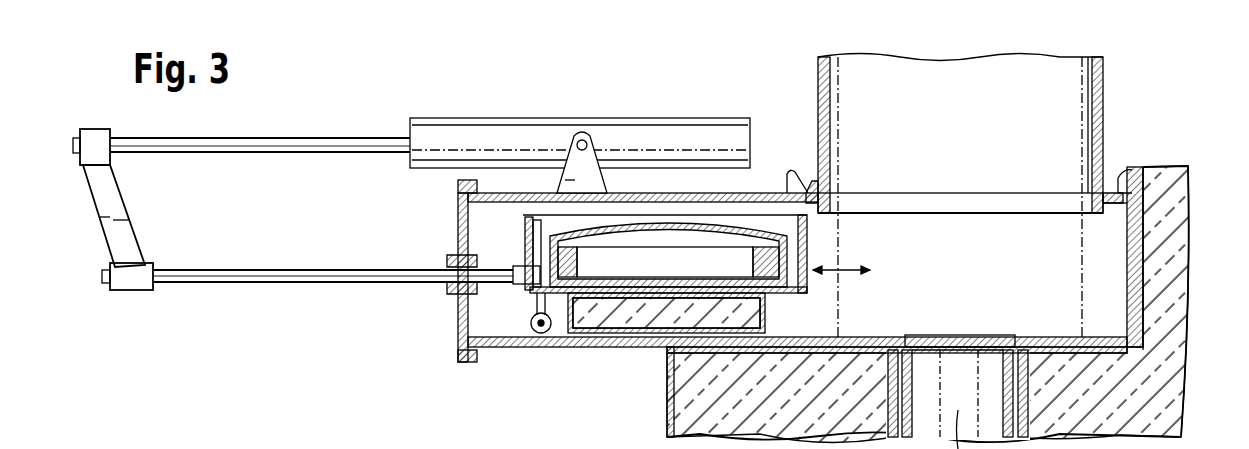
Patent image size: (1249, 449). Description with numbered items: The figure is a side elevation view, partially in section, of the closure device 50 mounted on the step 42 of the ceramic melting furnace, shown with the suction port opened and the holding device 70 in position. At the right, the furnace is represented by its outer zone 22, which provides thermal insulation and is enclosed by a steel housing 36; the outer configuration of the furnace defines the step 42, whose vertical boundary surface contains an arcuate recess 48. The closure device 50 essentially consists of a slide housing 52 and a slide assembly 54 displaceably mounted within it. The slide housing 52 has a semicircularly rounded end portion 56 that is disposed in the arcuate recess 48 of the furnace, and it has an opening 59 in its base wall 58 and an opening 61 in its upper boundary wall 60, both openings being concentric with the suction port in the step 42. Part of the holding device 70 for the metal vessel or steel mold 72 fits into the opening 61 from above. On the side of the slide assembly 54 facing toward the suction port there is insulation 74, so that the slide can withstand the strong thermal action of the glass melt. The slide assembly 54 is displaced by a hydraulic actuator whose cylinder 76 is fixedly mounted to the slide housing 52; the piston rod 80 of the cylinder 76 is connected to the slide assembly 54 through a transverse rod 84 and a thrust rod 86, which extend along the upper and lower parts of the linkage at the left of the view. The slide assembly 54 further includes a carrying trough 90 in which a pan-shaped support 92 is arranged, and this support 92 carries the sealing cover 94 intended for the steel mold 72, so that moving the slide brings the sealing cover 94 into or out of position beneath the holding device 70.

The outer zone 22 is at (1160, 393).
The steel housing 36 is at (668, 374).
The step 42 is at (727, 364).
The arcuate recess 48 is at (1145, 240).
The closure device 50 is at (748, 108).
The slide housing 52 is at (458, 322).
The slide assembly 54 is at (518, 292).
The semicircularly rounded end portion 56 is at (1135, 272).
The base wall 58 is at (546, 334).
The opening 59 is at (958, 338).
The upper boundary wall 60 is at (770, 192).
The opening 61 is at (958, 200).
The holding device 70 is at (1110, 78).
The steel mold 72 is at (1105, 121).
The insulation 74 is at (600, 312).
The cylinder 76 is at (504, 132).
The piston rod 80 is at (263, 137).
The transverse rod 84 is at (113, 228).
The thrust rod 86 is at (263, 283).
The carrying trough 90 is at (533, 221).
The pan-shaped support 92 is at (533, 241).
The sealing cover 94 is at (690, 222).